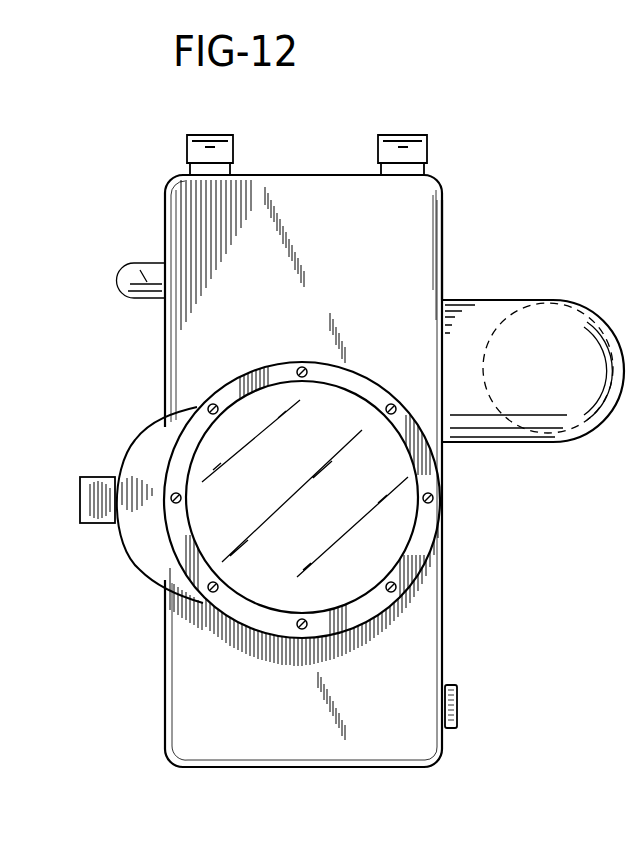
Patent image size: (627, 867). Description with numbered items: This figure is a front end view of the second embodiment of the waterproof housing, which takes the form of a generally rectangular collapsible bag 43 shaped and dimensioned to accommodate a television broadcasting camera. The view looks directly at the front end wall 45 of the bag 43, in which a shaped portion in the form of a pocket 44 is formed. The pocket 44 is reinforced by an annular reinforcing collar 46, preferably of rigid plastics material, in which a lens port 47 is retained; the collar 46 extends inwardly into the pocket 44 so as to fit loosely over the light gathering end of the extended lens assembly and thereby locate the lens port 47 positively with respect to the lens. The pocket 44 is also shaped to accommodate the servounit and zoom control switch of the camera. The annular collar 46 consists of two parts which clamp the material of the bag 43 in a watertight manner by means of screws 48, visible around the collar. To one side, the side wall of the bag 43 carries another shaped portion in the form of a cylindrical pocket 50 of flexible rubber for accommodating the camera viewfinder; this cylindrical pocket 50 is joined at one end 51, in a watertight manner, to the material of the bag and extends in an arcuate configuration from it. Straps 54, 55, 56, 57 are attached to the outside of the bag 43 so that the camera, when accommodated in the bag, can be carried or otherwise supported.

The collapsible bag 43 is at (161, 726).
The pocket 44 is at (157, 428).
The front end wall 45 is at (320, 312).
The annular reinforcing collar 46 is at (373, 607).
The lens port 47 is at (253, 585).
The screws 48 is at (396, 588).
The cylindrical pocket 50 is at (547, 301).
The end of cylindrical pocket 51 is at (443, 273).
The strap 54 is at (187, 151).
The strap 55 is at (427, 150).
The strap 56 is at (95, 478).
The strap 57 is at (458, 705).